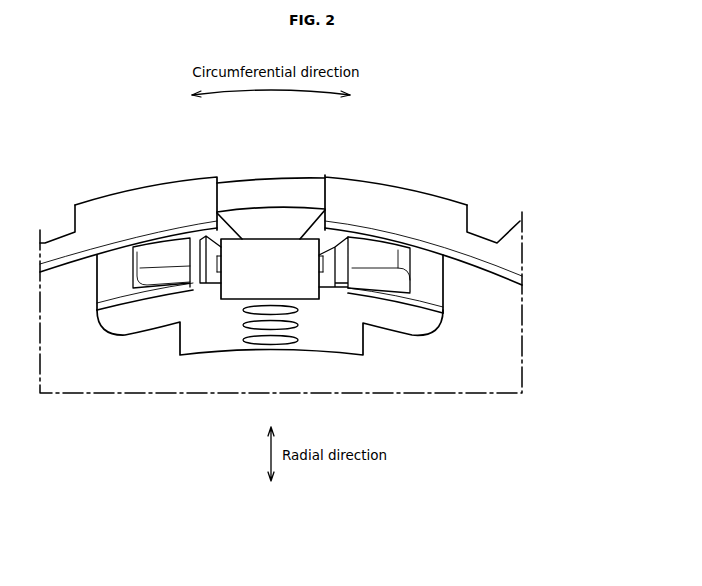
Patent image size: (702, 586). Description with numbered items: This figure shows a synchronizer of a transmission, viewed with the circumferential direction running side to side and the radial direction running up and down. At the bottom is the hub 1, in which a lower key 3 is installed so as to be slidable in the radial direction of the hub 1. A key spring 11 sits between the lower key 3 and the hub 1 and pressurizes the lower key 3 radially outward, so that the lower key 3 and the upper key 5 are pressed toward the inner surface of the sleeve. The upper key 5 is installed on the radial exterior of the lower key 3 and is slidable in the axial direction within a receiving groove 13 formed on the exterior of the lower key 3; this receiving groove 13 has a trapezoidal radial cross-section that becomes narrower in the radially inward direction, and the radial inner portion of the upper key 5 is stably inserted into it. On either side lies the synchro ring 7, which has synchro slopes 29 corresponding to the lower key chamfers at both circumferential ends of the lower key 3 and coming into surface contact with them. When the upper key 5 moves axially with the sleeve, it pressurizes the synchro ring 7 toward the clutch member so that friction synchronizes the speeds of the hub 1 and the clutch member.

The hub 1 is at (492, 362).
The lower key 3 is at (288, 257).
The upper key 5 is at (272, 187).
The synchro ring 7 is at (431, 275).
The key spring 11 is at (258, 337).
The receiving groove 13 is at (251, 238).
The synchro slope 29 is at (193, 243).